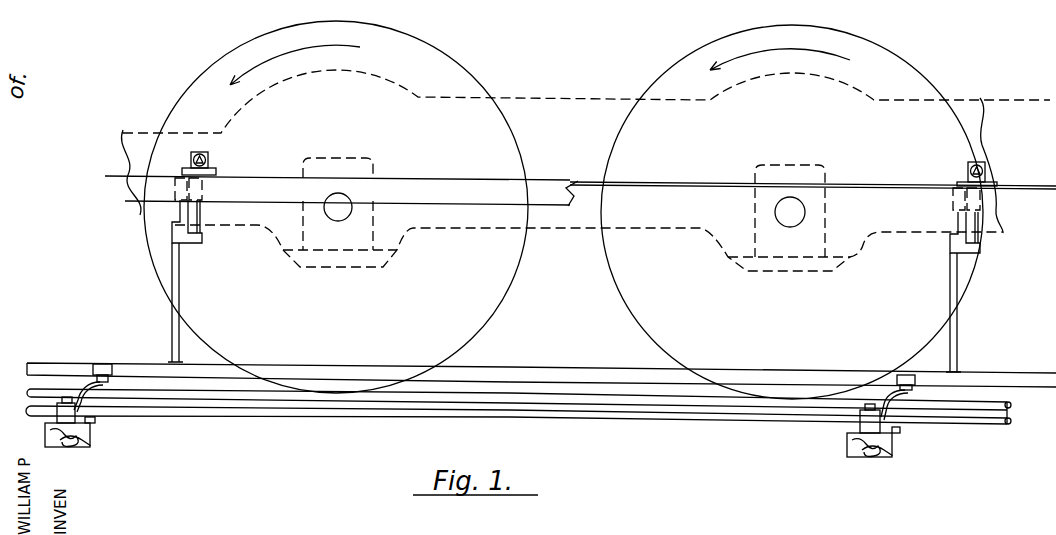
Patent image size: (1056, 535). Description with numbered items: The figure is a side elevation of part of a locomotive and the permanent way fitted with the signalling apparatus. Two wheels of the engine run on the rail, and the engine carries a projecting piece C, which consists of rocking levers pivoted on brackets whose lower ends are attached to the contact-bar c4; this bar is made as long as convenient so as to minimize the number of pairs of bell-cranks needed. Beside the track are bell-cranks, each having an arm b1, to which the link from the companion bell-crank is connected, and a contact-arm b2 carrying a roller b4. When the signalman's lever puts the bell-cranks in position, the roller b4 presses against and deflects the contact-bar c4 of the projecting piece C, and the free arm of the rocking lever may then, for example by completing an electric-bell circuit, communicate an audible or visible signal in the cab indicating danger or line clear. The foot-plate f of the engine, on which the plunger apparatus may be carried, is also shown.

The arm of the bell-crank B b1 is at (87, 430).
The contact-arm of the bell-crank B b2 is at (970, 375).
The roller b4 is at (105, 370).
The projecting piece C is at (561, 286).
The contact-bar c4 is at (517, 378).
The foot-plate f is at (570, 182).